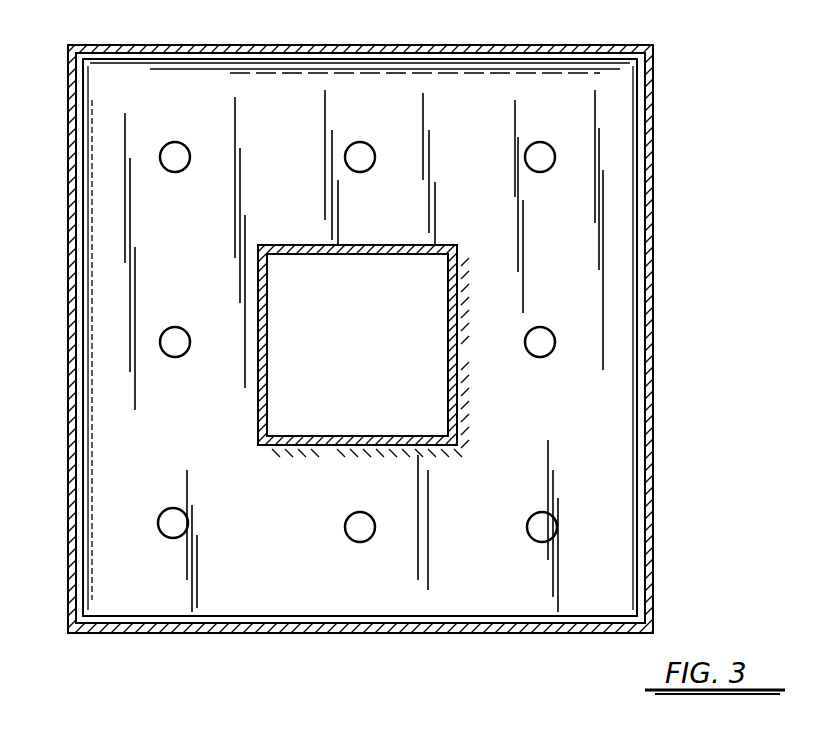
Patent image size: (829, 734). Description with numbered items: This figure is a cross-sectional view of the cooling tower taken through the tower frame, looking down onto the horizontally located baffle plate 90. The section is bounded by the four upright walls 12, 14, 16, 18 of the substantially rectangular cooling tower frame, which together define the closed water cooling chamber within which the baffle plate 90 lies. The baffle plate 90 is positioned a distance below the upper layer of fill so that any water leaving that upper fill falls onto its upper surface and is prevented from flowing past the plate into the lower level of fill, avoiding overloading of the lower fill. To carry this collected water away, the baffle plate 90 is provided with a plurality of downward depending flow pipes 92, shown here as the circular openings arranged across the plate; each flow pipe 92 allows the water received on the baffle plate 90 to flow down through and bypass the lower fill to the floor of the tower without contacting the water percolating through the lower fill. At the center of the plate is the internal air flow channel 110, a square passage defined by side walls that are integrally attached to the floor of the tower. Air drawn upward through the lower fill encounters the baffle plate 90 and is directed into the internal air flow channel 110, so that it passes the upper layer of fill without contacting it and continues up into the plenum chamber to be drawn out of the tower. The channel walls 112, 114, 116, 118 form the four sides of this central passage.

The upright wall 12 is at (68, 172).
The upright wall 14 is at (290, 633).
The upright wall 16 is at (654, 250).
The upright wall 18 is at (341, 45).
The baffle plate 90 is at (364, 351).
The flow pipes 92 is at (549, 156).
The internal air flow channel 110 is at (387, 337).
The top wall of opening 112 is at (313, 245).
The left wall of opening 114 is at (258, 323).
The bottom wall of opening 116 is at (320, 450).
The right wall of opening 118 is at (452, 353).